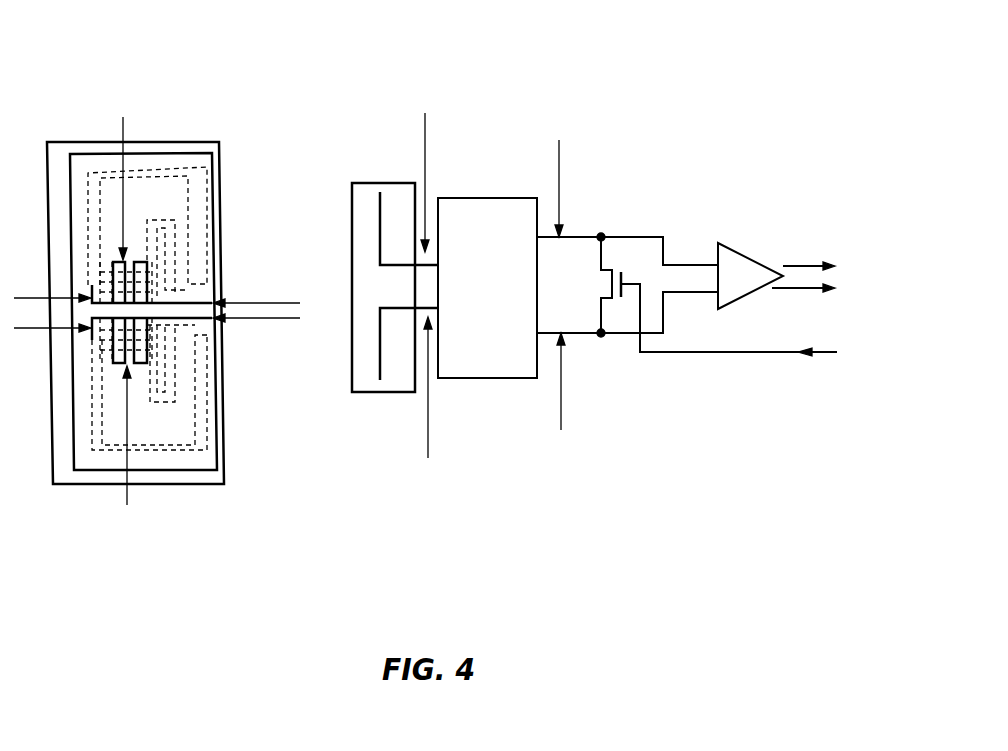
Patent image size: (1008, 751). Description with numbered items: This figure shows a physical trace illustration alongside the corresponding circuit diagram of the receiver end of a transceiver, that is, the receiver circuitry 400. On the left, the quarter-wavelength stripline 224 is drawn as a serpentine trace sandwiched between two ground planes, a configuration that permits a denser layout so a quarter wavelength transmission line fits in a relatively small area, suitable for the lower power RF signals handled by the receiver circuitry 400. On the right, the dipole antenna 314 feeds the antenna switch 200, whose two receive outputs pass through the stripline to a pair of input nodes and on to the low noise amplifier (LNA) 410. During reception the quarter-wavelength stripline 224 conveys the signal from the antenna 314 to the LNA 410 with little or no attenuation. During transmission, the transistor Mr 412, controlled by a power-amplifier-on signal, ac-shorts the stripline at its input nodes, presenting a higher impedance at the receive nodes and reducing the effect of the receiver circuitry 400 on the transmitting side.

The receiver circuitry 400 is at (657, 62).
The antenna 314 is at (380, 183).
The antenna switch 200 is at (495, 198).
The transistor Mr 412 is at (603, 256).
The low noise amplifier (LNA) 410 is at (751, 260).
The quarter-wavelength stripline 224 is at (150, 275).